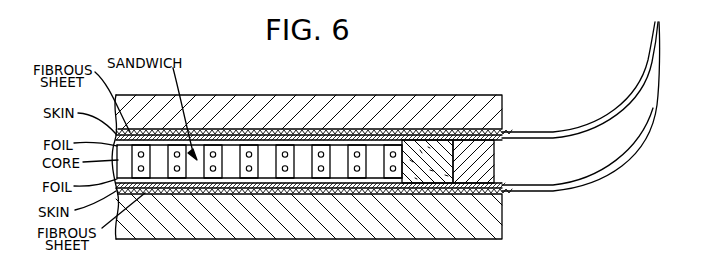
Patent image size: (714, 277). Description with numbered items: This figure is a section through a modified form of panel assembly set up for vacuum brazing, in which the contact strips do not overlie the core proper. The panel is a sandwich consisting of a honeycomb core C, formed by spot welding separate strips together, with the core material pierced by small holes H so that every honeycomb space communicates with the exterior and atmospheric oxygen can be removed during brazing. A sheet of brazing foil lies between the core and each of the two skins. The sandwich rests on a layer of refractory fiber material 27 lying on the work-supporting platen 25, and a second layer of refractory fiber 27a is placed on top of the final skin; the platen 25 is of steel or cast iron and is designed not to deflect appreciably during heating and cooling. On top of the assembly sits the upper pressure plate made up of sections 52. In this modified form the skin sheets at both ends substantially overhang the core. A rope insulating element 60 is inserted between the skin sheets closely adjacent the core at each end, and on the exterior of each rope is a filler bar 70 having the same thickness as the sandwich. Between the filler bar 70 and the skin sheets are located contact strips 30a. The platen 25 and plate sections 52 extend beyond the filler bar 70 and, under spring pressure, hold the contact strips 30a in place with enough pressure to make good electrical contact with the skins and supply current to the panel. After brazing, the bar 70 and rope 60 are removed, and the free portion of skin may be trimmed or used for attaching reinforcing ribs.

The pressure plate section 52 is at (377, 100).
The work-supporting platen 25 is at (338, 233).
The second layer of refractory fiber 27a is at (268, 130).
The layer of refractory fiber material 27 is at (250, 193).
The honeycomb core C is at (323, 174).
The small holes H is at (357, 151).
The rope insulating element 60 is at (433, 143).
The filler bar 70 is at (490, 162).
The contact strip 30a is at (650, 107).